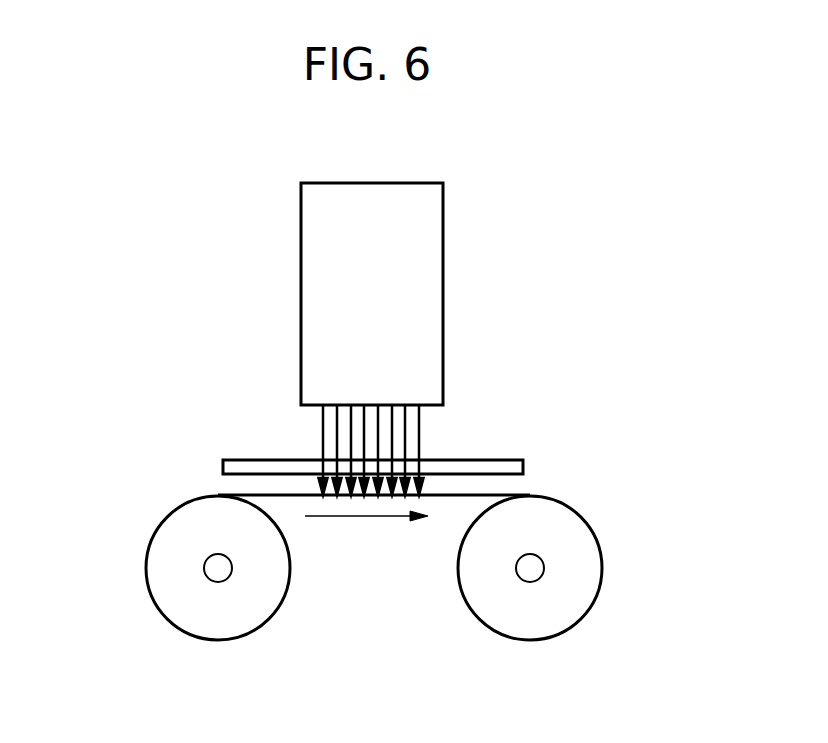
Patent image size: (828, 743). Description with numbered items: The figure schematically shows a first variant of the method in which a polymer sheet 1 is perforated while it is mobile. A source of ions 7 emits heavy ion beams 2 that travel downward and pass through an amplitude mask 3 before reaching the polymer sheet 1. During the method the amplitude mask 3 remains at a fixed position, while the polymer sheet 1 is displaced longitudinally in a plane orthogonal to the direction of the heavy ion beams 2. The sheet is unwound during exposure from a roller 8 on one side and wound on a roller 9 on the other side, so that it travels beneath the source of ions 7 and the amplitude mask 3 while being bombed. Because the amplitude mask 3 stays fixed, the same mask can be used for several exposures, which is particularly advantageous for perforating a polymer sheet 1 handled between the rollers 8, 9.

The polymer sheet 1 is at (446, 500).
The heavy ion beams 2 is at (419, 433).
The amplitude mask 3 is at (243, 458).
The source of ions 7 is at (427, 278).
The roller 8 is at (171, 609).
The roller 9 is at (568, 612).